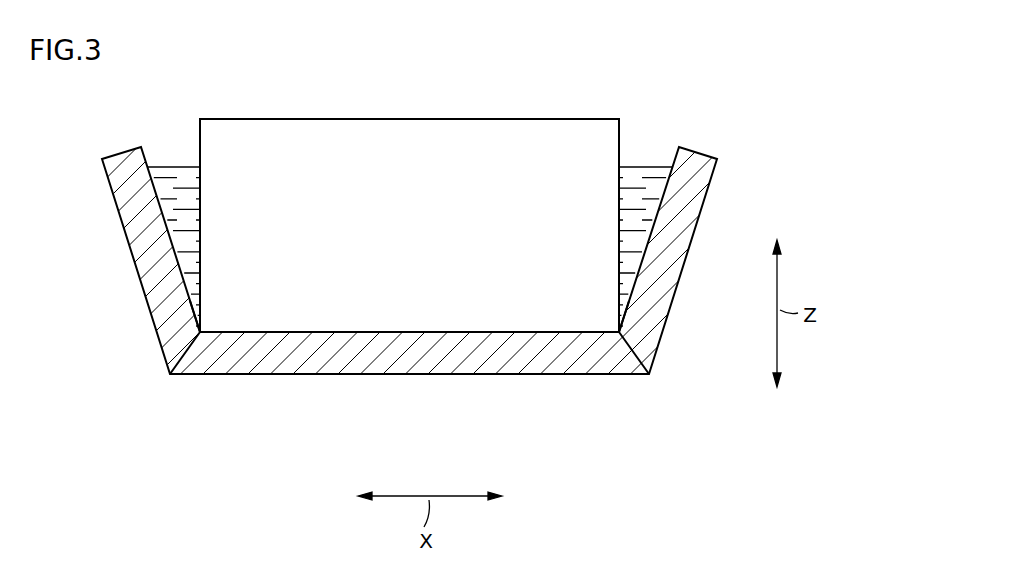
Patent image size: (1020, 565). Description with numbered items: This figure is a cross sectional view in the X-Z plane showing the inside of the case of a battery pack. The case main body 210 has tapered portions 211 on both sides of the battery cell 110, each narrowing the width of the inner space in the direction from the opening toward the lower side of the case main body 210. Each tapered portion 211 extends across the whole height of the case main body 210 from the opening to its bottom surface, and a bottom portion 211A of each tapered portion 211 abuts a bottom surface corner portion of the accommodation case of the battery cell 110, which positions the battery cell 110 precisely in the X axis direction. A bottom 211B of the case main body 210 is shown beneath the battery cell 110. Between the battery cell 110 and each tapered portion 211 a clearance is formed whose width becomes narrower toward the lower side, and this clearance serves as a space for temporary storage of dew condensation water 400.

The battery cell 110 is at (410, 135).
The case main body 210 is at (731, 221).
The tapered portion 211 is at (143, 273).
The bottom portion 211A is at (200, 333).
The bottom portion 211B is at (405, 358).
The dew condensation water 400 is at (177, 178).